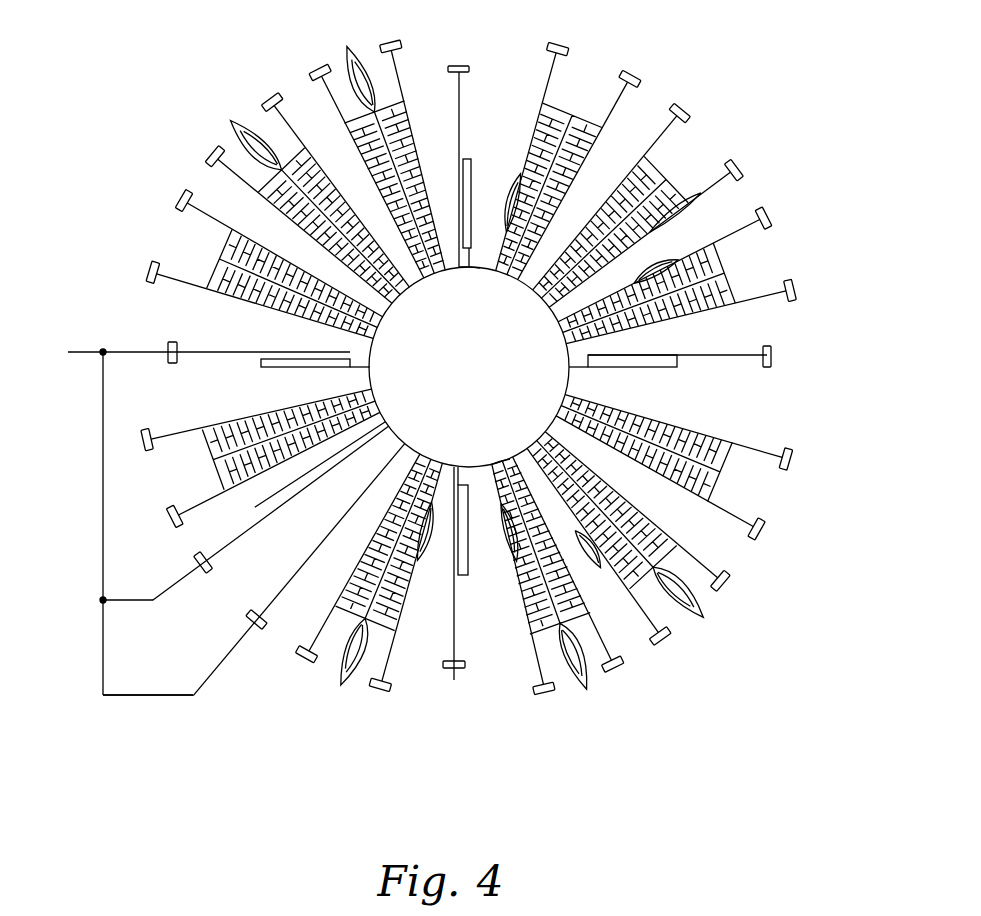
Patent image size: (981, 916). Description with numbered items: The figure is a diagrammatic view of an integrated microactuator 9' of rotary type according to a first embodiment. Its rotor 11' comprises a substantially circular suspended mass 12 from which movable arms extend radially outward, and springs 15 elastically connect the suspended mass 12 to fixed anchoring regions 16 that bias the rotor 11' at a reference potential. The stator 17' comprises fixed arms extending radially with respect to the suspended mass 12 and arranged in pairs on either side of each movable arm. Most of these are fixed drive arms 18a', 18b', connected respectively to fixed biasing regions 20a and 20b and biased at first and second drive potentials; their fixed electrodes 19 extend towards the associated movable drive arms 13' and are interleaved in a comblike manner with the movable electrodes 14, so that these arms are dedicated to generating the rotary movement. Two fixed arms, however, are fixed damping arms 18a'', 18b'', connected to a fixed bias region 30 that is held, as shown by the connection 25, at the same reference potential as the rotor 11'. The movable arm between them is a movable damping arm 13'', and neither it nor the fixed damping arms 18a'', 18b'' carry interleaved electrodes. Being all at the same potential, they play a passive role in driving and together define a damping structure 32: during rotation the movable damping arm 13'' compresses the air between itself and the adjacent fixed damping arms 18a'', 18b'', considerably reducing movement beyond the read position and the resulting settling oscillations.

The integrated microactuator 9' is at (172, 700).
The rotor 11' is at (451, 181).
The suspended mass 12 is at (457, 382).
The movable drive arms 13' is at (468, 342).
The movable damping arm 13'' is at (259, 574).
The movable electrodes 14 is at (377, 78).
The springs 15 is at (463, 98).
The fixed anchoring regions 16 is at (462, 64).
The stator 17' is at (476, 614).
The fixed drive arms 18a' is at (468, 385).
The fixed drive arms 18b' is at (468, 396).
The fixed damping arm 18a'' is at (298, 570).
The fixed damping arm 18b'' is at (265, 534).
The fixed electrodes 19 is at (512, 206).
The fixed biasing regions 20a is at (313, 68).
The fixed biasing regions 20b is at (177, 196).
The connection 25 is at (103, 455).
The fixed bias region 30 is at (196, 566).
The damping structure 32 is at (254, 507).